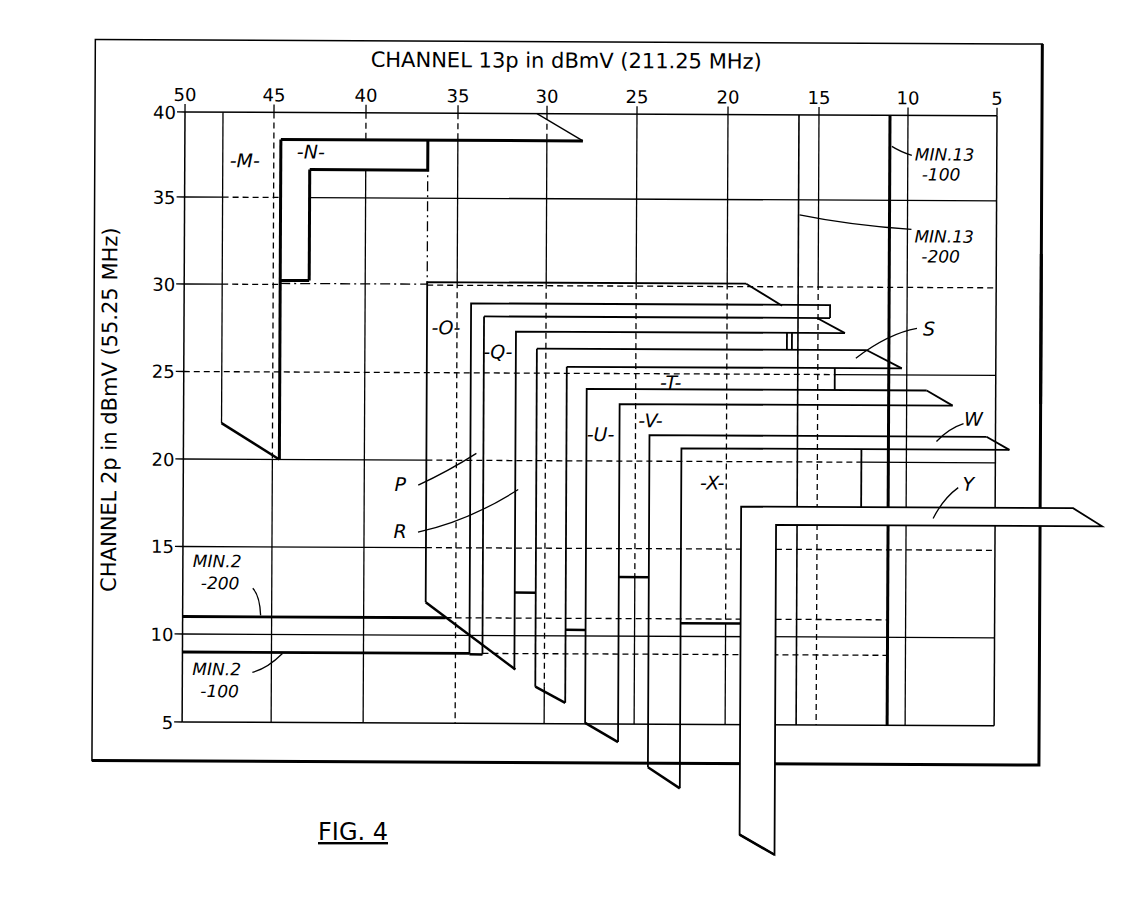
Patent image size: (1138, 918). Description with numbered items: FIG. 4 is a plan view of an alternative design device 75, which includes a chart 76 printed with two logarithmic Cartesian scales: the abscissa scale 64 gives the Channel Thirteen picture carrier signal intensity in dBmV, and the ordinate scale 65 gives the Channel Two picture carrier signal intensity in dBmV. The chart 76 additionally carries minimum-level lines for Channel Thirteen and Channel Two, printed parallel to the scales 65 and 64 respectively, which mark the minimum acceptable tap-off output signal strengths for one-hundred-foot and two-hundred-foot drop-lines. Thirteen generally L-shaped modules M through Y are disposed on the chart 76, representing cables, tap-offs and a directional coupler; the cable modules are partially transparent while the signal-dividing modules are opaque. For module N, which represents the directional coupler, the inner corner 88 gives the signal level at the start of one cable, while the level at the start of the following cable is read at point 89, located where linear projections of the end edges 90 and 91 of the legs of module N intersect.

The abscissa scale 64 is at (852, 100).
The ordinate scale 65 is at (147, 235).
The device 75 is at (1052, 284).
The chart 76 is at (1020, 300).
The inner corner 88 is at (316, 172).
The point 89 is at (426, 281).
The end edge 90 is at (295, 285).
The end edge 91 is at (432, 147).